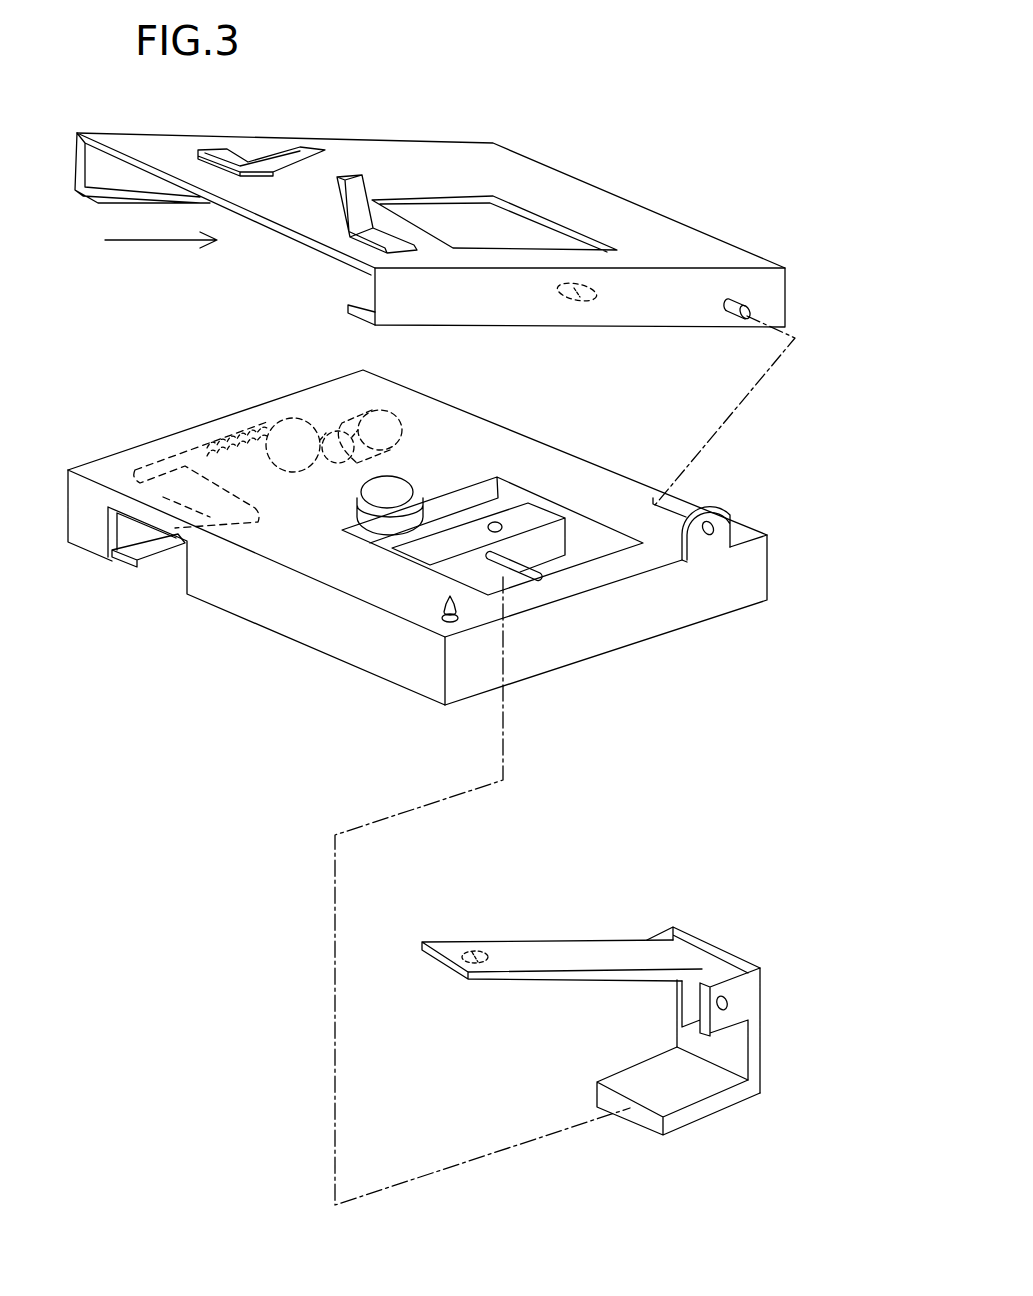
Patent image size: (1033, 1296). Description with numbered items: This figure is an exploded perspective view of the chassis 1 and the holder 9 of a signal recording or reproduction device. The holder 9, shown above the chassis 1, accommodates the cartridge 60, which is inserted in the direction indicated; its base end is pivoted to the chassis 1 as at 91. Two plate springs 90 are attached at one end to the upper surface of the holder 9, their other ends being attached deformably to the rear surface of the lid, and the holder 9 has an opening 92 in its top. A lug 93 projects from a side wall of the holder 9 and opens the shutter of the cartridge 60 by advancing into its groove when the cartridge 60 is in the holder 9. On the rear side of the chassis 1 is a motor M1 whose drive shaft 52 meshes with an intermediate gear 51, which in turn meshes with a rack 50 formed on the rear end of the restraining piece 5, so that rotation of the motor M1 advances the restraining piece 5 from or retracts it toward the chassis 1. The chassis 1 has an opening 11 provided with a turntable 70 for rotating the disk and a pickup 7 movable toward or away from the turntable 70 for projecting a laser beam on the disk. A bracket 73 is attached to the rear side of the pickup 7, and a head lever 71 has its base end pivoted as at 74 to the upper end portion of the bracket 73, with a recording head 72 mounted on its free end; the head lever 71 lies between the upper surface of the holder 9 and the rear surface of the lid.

The chassis 1 is at (733, 588).
The restraining piece 5 is at (145, 561).
The pickup 7 is at (558, 540).
The holder 9 is at (652, 227).
The opening 11 is at (620, 550).
The rack 50 is at (270, 420).
The intermediate gear 51 is at (298, 428).
The drive shaft 52 is at (337, 433).
The motor M1 is at (433, 400).
The cartridge 60 is at (166, 259).
The turntable 70 is at (397, 490).
The head lever 71 is at (583, 950).
The recording head 72 is at (480, 940).
The bracket 73 is at (742, 990).
The pivot 74 is at (728, 1009).
The plate spring 90 is at (282, 150).
The pivot 91 is at (720, 528).
The opening 92 is at (533, 247).
The lug 93 is at (585, 301).